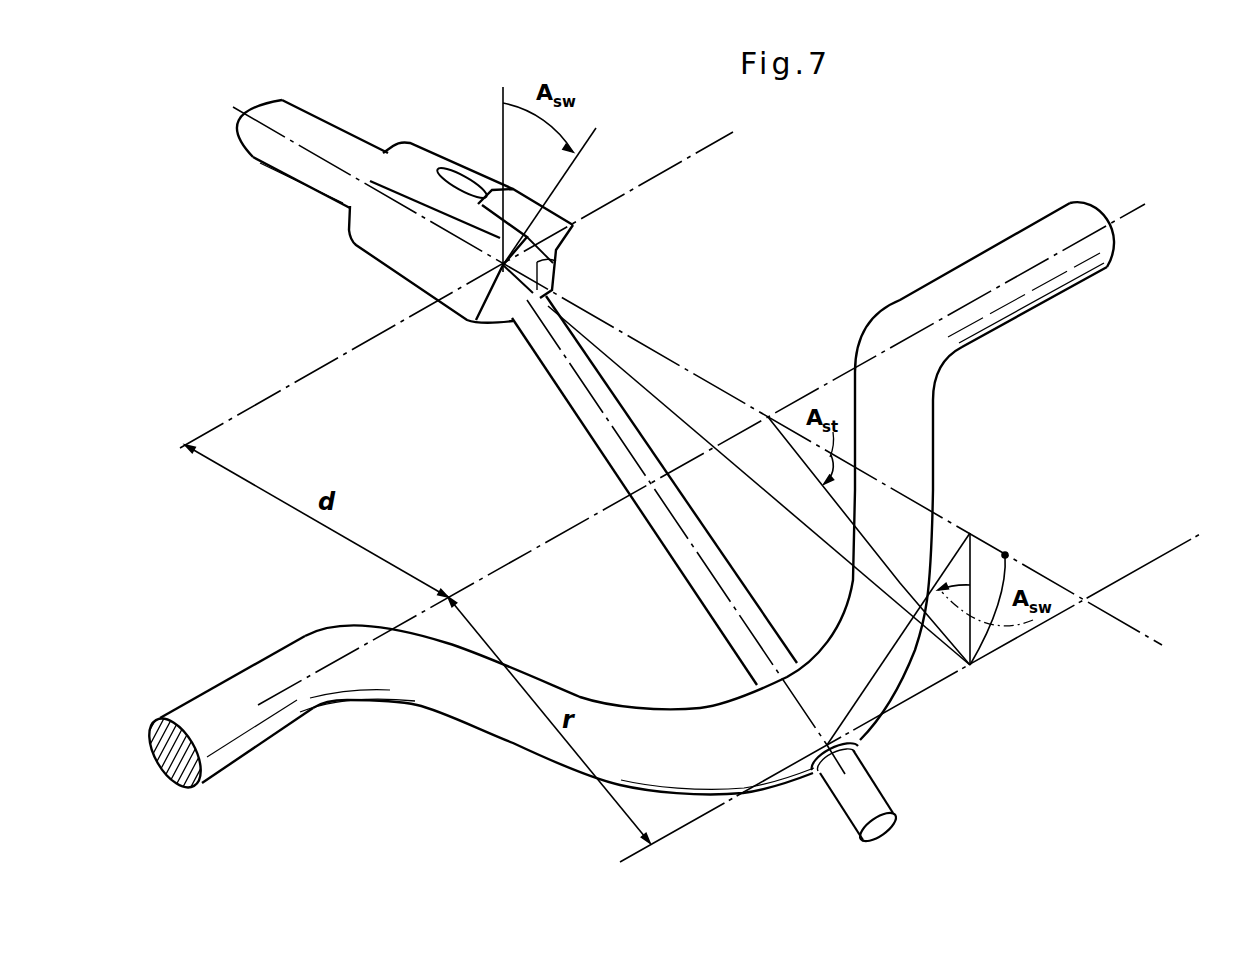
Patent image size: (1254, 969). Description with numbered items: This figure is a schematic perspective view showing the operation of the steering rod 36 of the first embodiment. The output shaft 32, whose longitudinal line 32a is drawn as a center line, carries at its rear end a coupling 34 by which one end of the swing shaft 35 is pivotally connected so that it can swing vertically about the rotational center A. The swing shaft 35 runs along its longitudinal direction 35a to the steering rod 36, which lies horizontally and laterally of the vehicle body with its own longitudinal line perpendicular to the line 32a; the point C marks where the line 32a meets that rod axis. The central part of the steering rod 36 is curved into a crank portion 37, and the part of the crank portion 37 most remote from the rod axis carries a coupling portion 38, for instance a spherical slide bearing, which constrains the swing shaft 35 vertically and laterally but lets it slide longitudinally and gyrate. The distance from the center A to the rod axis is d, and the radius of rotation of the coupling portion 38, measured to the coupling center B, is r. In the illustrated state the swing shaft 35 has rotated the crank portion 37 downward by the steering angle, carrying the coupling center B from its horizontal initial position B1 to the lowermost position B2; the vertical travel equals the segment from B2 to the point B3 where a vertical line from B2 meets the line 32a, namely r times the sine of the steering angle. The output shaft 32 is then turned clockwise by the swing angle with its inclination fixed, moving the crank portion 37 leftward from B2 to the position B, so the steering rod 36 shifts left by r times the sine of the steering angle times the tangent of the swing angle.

The output shaft 32 is at (322, 122).
The longitudinal line of the output shaft 32a is at (687, 368).
The coupling 34 is at (452, 158).
The swing shaft 35 is at (556, 382).
The stem extension axis 35a is at (710, 578).
The steering rod 36 is at (320, 632).
The crank portion 37 is at (487, 735).
The coupling portion 38 is at (868, 747).
The rotational center of the swing shaft A is at (500, 266).
The center of the coupling B is at (822, 745).
The handlebar axis reference point C is at (768, 417).
The horizontal initial position of the coupling center B1 is at (1006, 555).
The lower most position of the coupling center B2 is at (976, 675).
The intersection point on the longitudinal line of the output shaft B3 is at (971, 532).